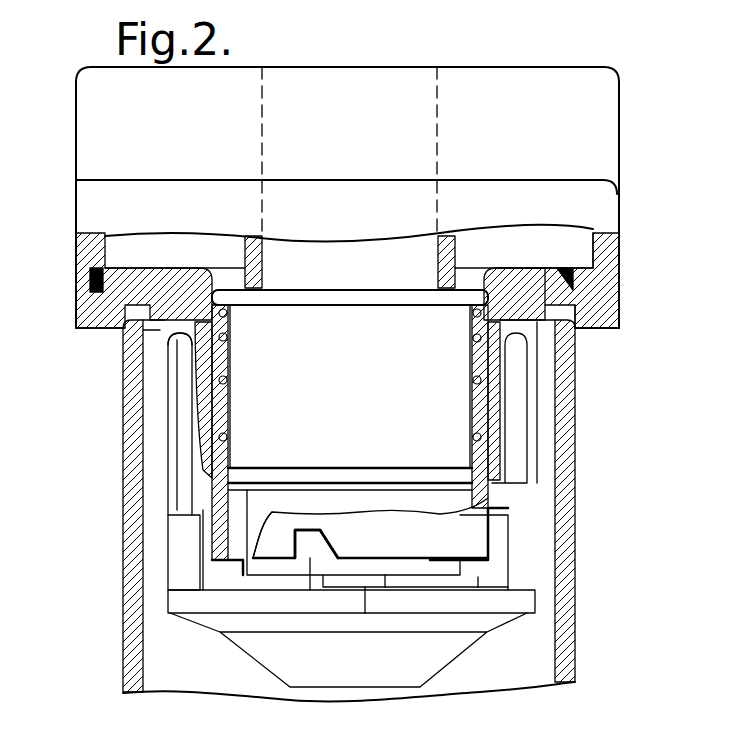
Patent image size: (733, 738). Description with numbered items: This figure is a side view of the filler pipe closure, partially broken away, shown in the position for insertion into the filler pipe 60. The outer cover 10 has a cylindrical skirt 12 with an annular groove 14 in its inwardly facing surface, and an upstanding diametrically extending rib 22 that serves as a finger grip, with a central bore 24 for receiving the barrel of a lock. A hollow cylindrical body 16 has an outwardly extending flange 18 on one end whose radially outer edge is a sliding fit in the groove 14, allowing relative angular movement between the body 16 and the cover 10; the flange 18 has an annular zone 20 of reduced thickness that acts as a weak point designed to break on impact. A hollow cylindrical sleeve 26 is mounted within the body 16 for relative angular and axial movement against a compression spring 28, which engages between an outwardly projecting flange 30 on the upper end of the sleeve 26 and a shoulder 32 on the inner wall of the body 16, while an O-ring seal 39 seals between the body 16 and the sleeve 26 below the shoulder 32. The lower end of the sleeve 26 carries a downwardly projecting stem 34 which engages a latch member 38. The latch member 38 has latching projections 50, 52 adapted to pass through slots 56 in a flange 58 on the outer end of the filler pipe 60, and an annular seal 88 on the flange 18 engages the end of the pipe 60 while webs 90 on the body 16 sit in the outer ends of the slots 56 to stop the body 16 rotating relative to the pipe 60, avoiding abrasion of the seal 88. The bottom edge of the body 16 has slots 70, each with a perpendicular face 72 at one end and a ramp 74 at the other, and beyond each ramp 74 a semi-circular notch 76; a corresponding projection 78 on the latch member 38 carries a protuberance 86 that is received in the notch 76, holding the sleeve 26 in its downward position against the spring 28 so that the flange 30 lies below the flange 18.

The outer cover 10 is at (622, 212).
The cylindrical skirt 12 is at (612, 325).
The annular groove 14 is at (88, 282).
The hollow cylindrical body 16 is at (228, 498).
The outwardly extending flange 18 is at (530, 268).
The annular zone of reduced thickness 20 is at (580, 262).
The rib 22 is at (578, 125).
The bore 24 is at (370, 255).
The hollow cylindrical sleeve 26 is at (440, 495).
The compression spring 28 is at (200, 395).
The outwardly projecting flange 30 is at (293, 292).
The shoulder 32 is at (520, 440).
The stem 34 is at (365, 613).
The latch member 38 is at (525, 615).
The O-ring seal 39 is at (348, 470).
The latching projection 50 is at (175, 558).
The latching projection 52 is at (500, 555).
The slots 56 is at (180, 467).
The flange 58 is at (515, 390).
The filler pipe 60 is at (123, 660).
The slots 70 is at (310, 590).
The perpendicular face 72 is at (288, 540).
The ramp 74 is at (335, 540).
The semi-circular notch 76 is at (395, 558).
The projection 78 is at (418, 580).
The protuberance 86 is at (393, 562).
The annular seal 88 is at (125, 330).
The webs 90 is at (182, 360).